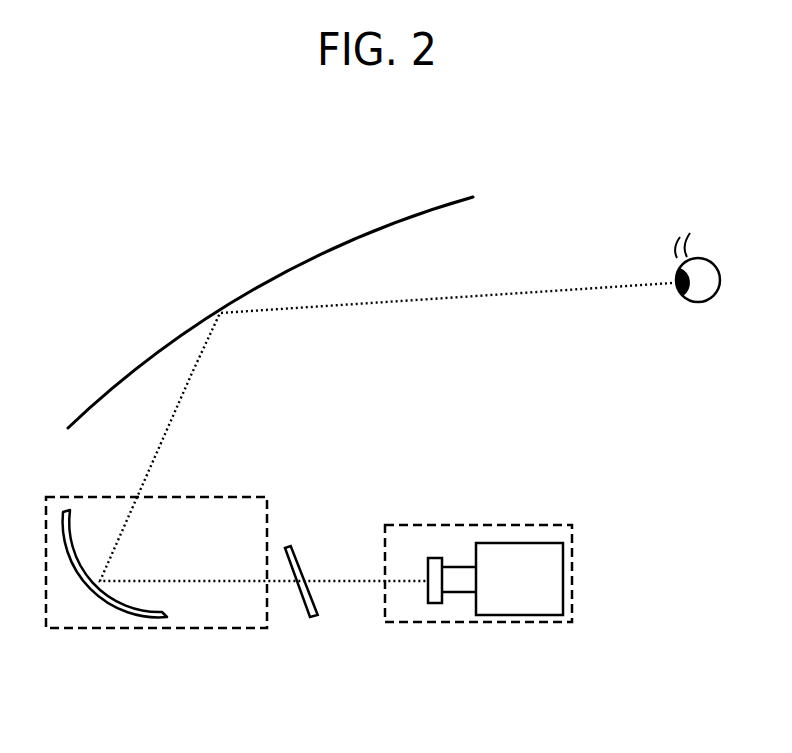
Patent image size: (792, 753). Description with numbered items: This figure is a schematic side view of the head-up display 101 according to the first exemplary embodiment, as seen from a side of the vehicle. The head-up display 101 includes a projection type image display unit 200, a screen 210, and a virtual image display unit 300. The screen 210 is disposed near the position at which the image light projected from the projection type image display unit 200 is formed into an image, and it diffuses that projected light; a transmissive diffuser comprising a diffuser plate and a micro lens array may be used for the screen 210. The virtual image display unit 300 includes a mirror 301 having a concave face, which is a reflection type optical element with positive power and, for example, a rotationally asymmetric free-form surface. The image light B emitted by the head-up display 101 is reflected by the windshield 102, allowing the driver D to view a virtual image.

The windshield 102 is at (327, 250).
The image light B is at (193, 373).
The driver D is at (712, 262).
The head-up display 101 is at (309, 569).
The virtual image display unit 300 is at (156, 569).
The mirror 301 is at (123, 610).
The screen 210 is at (298, 563).
The projection type image display unit 200 is at (512, 525).